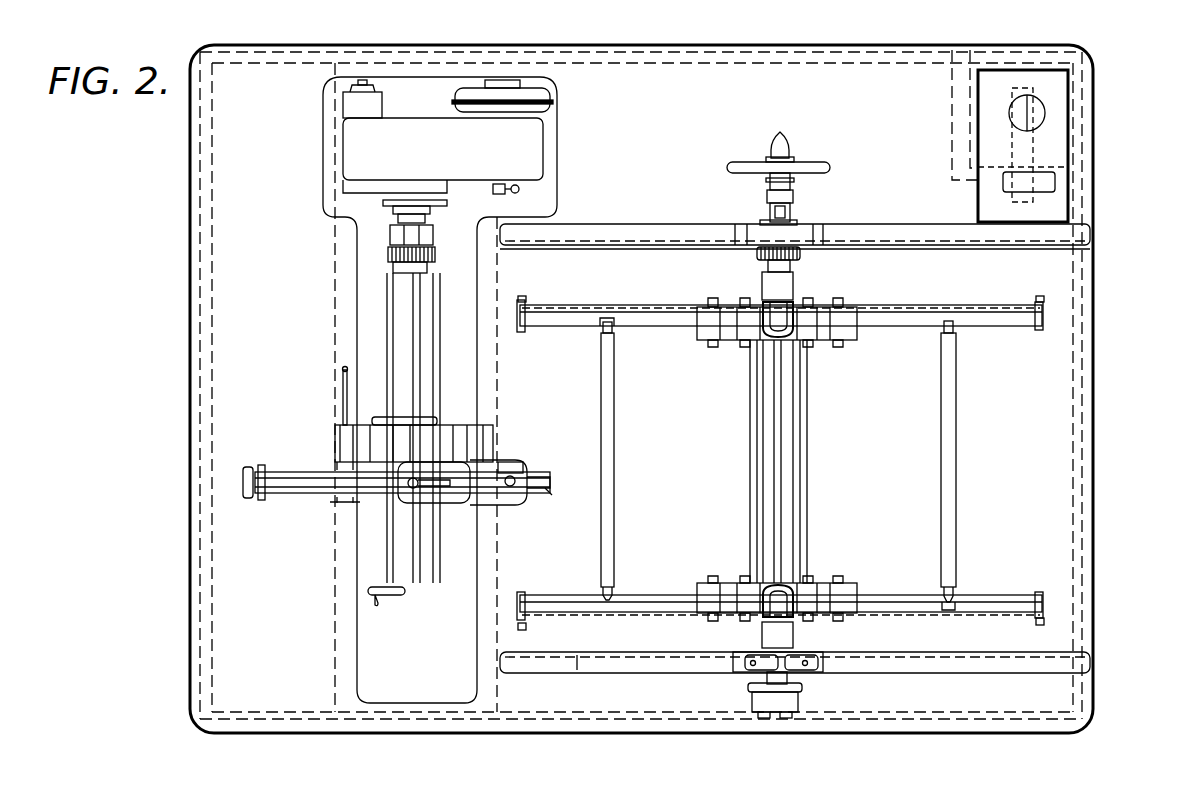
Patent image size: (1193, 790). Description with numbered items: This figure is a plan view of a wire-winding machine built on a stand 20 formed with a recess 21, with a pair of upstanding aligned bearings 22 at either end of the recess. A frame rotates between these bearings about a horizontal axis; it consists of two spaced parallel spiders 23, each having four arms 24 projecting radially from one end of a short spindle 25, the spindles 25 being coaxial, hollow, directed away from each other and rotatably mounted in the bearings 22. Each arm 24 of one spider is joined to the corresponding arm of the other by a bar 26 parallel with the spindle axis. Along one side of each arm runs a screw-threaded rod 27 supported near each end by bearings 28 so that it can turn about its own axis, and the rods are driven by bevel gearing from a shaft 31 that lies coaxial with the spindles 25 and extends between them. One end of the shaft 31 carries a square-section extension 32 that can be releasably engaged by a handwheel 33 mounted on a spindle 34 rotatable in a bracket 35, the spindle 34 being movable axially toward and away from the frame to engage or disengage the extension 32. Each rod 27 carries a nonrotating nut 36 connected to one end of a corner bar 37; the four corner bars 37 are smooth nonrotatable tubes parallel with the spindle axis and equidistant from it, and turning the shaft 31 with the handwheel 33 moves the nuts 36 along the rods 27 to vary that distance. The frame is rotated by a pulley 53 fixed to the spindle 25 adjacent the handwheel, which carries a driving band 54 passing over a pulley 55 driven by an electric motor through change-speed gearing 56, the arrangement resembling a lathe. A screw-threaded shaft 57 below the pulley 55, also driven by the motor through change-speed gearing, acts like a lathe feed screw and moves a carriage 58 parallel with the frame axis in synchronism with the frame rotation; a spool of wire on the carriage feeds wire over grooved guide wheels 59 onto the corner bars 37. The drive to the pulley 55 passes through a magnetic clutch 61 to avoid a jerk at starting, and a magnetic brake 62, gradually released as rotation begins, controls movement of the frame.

The stand 20 is at (1095, 352).
The recess 21 is at (886, 502).
The bearings 22 is at (775, 232).
The spiders 23 is at (855, 332).
The arms 24 is at (1018, 305).
The spindle 25 is at (790, 285).
The bar 26 is at (806, 440).
The screw-threaded rod 27 is at (665, 322).
The bearings 28 is at (520, 330).
The shaft 31 is at (778, 532).
The extension 32 is at (768, 205).
The handwheel 33 is at (812, 160).
The spindle 34 is at (790, 182).
The bracket 35 is at (795, 212).
The nut 36 is at (610, 322).
The corner bars 37 is at (605, 490).
The pulley 53 is at (802, 254).
The driving band 54 is at (655, 250).
The pulley 55 is at (388, 256).
The change-speed gearing 56 is at (530, 143).
The screw-threaded shaft 57 is at (410, 368).
The carriage 58 is at (400, 447).
The guide wheels 59 is at (455, 485).
The magnetic clutch 61 is at (395, 235).
The magnetic brake 62 is at (792, 705).